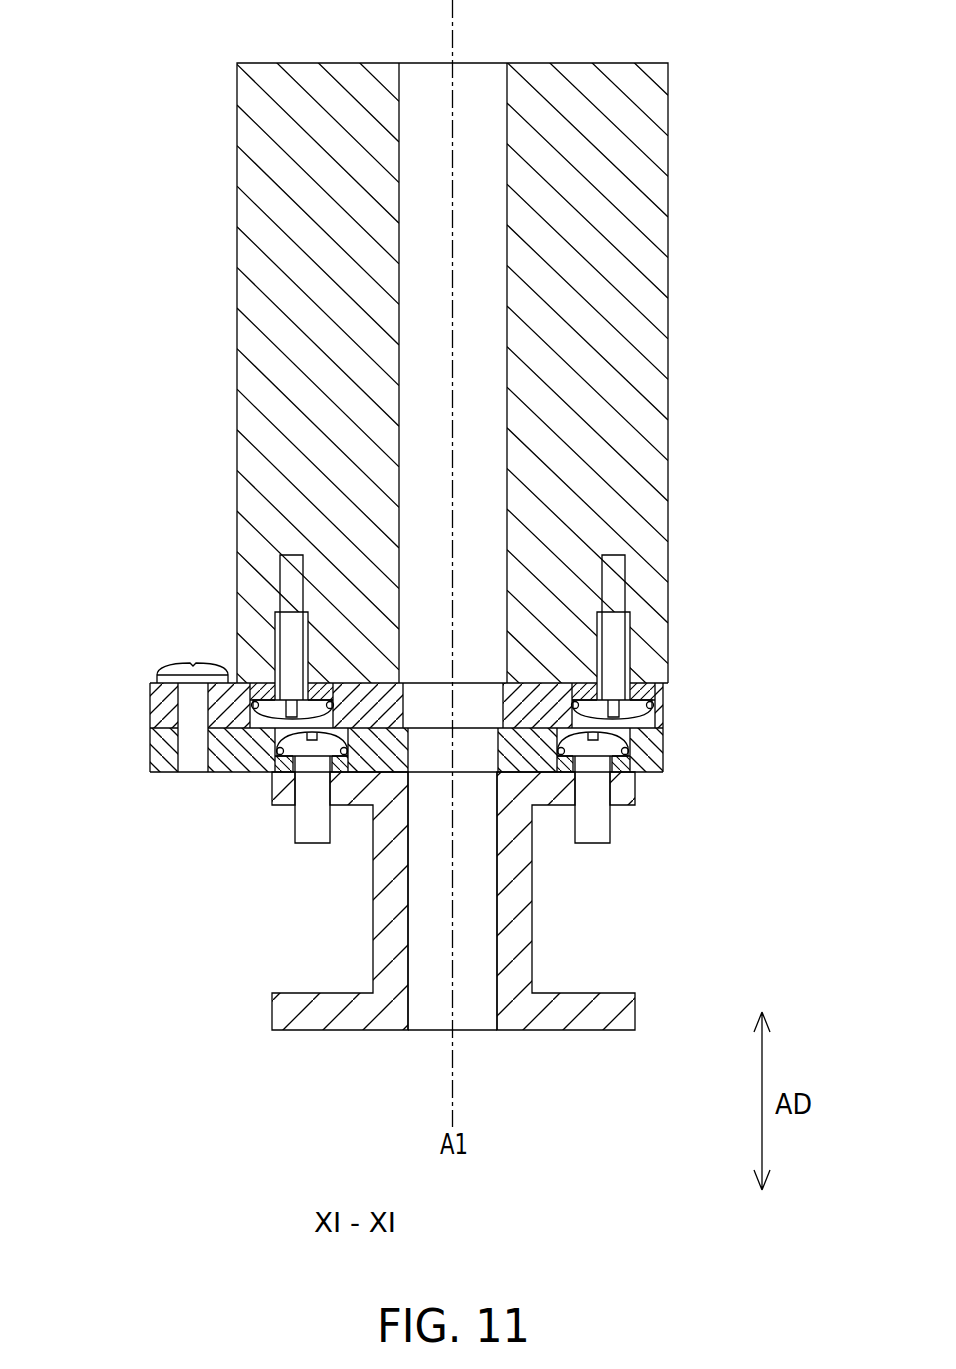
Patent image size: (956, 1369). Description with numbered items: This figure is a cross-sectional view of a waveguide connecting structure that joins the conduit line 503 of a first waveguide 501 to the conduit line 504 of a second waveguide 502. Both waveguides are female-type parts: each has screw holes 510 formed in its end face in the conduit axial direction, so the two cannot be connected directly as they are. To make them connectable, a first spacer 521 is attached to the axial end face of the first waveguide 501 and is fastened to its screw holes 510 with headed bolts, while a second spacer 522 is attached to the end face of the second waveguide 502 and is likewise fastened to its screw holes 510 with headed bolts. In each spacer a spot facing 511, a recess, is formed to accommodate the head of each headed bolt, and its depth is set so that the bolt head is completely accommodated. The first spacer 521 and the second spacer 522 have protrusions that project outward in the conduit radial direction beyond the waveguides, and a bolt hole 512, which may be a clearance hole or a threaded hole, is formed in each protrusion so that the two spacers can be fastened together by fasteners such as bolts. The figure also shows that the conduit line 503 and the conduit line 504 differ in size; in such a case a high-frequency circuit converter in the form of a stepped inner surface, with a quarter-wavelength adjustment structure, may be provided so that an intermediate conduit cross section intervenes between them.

The first waveguide 501 is at (681, 408).
The second waveguide 502 is at (550, 895).
The conduit line 503 is at (442, 547).
The conduit line 504 is at (445, 937).
The screw hole 510 is at (270, 620).
The spot facing 511 is at (250, 692).
The bolt hole 512 is at (182, 710).
The first spacer 521 is at (150, 686).
The second spacer 522 is at (150, 766).